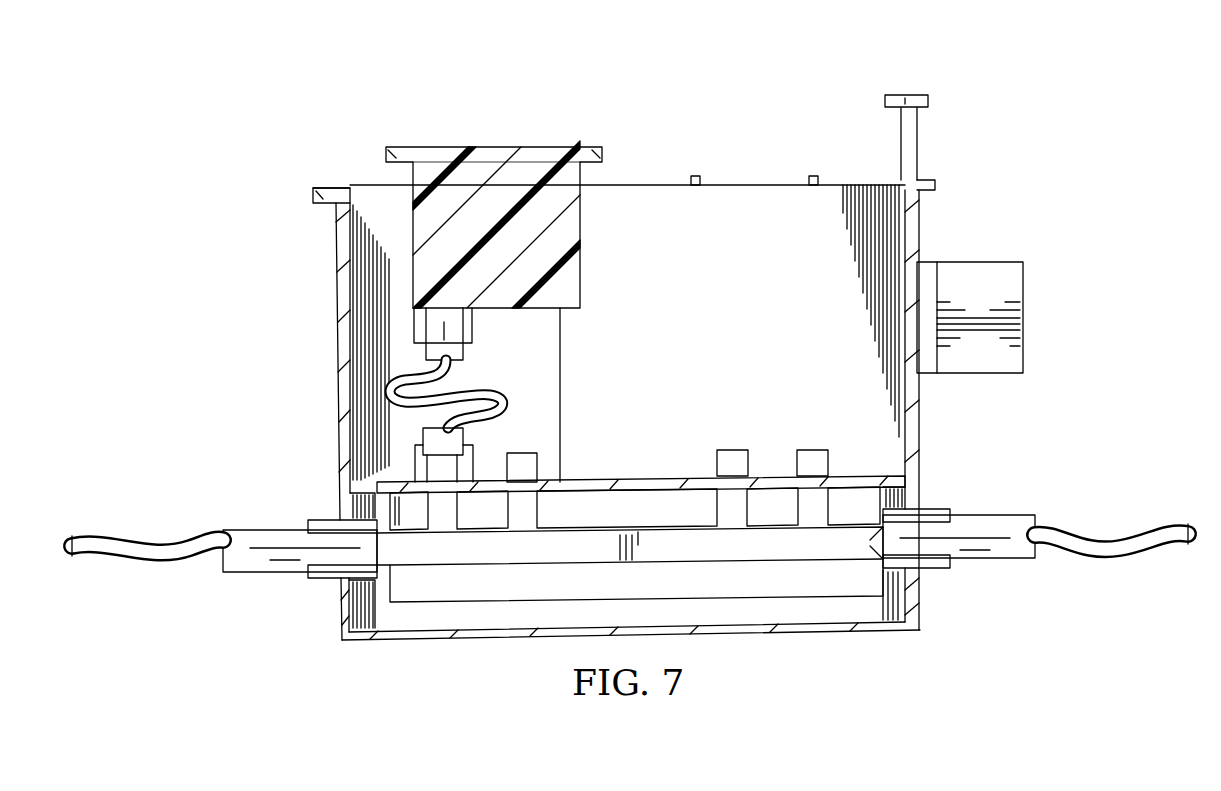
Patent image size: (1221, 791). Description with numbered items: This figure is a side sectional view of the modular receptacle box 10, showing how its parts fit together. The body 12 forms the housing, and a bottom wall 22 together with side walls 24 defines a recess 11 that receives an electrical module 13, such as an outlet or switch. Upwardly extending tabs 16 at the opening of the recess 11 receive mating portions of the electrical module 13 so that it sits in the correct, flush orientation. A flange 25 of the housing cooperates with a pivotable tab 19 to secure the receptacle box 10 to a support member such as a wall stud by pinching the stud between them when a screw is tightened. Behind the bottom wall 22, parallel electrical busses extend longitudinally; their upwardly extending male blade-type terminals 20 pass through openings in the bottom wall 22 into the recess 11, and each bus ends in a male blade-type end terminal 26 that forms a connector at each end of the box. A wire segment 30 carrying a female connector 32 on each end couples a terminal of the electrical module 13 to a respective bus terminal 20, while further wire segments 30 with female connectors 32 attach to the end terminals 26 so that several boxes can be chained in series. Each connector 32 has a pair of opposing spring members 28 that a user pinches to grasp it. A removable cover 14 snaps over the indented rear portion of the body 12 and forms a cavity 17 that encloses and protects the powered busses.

The modular receptacle box 10 is at (1004, 66).
The recess 11 is at (701, 345).
The body 12 is at (336, 297).
The electrical module 13 is at (441, 147).
The removable cover 14 is at (922, 608).
The upwardly extending tabs 16 is at (696, 176).
The cavity 17 is at (814, 612).
The pivotable tab 19 is at (1012, 283).
The male blade-type connector terminals 20 is at (525, 453).
The bottom wall 22 is at (629, 481).
The side walls 24 is at (348, 203).
The flange 25 is at (938, 186).
The end terminal 26 is at (690, 552).
The spring members 28 is at (334, 578).
The wire segment 30 is at (76, 560).
The female connector 32 is at (272, 560).